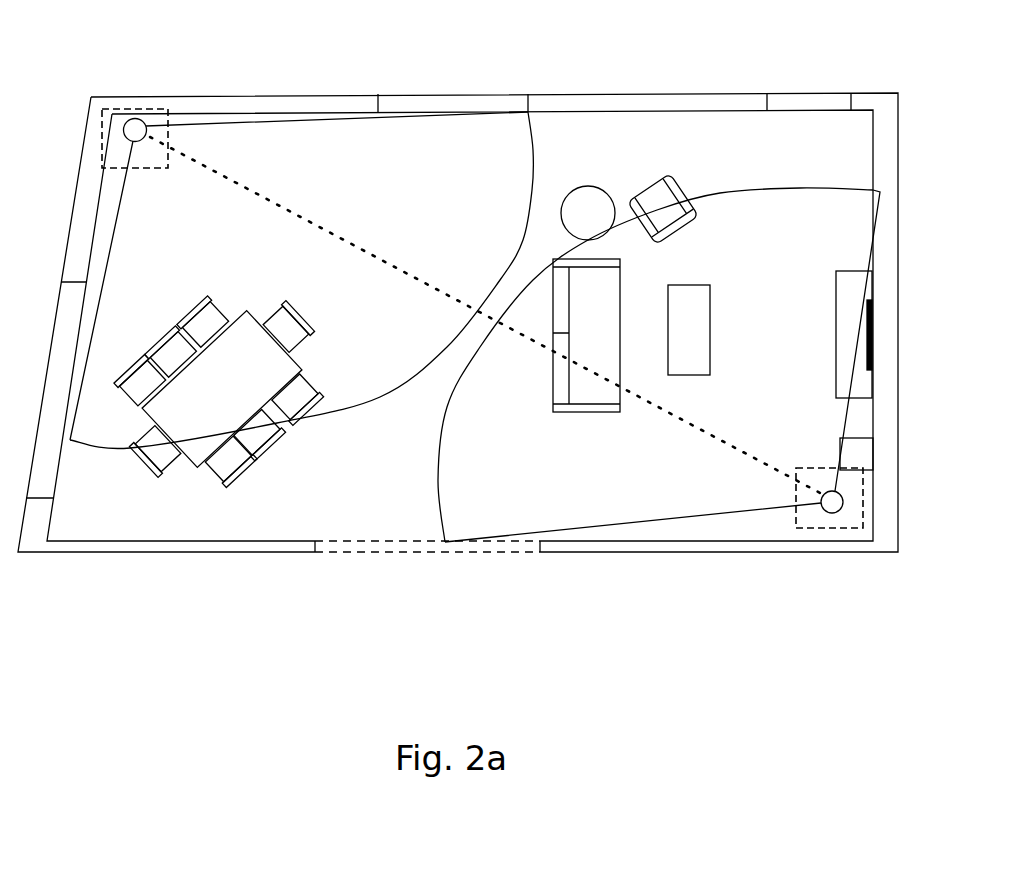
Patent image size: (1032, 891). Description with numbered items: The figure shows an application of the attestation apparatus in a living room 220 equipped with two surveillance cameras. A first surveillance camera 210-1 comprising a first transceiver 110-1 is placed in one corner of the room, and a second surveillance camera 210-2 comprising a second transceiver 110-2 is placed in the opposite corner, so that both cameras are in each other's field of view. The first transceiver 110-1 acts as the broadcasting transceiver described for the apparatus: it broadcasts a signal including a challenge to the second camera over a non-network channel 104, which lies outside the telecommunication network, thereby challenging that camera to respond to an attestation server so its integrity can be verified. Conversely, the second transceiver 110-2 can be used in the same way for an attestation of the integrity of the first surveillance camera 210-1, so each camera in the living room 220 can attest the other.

The first transceiver 110-1 is at (135, 118).
The first surveillance camera 210-1 is at (142, 118).
The second transceiver 110-2 is at (832, 513).
The second surveillance camera 210-2 is at (845, 528).
The non-network channel 104 is at (487, 315).
The living room 220 is at (358, 505).